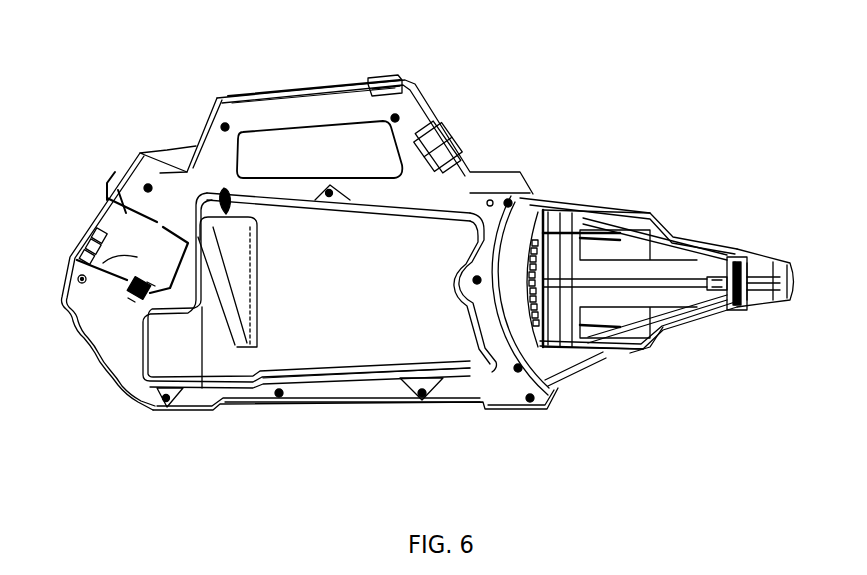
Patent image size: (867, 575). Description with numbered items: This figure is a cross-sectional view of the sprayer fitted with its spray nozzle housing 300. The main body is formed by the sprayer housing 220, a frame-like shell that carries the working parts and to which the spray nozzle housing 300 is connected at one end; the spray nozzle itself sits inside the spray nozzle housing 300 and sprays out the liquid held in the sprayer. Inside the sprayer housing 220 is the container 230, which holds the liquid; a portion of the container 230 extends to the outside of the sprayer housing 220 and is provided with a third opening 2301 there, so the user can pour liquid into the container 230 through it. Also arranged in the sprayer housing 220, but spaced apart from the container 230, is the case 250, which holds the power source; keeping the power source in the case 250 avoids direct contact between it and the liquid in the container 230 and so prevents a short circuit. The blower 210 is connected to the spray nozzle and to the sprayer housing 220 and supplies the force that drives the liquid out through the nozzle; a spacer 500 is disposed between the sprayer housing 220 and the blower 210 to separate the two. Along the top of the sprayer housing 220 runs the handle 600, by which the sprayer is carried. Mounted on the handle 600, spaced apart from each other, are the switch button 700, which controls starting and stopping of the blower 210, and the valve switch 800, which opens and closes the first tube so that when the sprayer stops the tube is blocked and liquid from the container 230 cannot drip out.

The blower 210 is at (662, 342).
The sprayer housing 220 is at (323, 403).
The container 230 is at (502, 176).
The third opening 2301 is at (230, 200).
The case 250 is at (137, 257).
The spray nozzle housing 300 is at (782, 307).
The spacer 500 is at (541, 392).
The handle 600 is at (332, 88).
The switch button 700 is at (407, 83).
The valve switch 800 is at (458, 135).